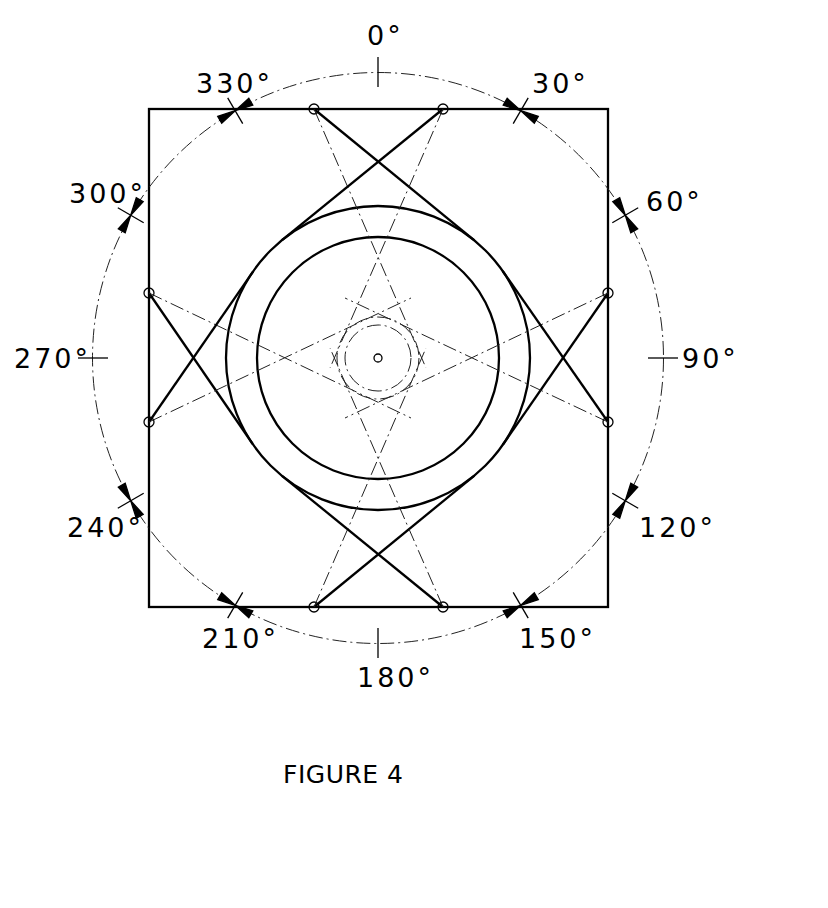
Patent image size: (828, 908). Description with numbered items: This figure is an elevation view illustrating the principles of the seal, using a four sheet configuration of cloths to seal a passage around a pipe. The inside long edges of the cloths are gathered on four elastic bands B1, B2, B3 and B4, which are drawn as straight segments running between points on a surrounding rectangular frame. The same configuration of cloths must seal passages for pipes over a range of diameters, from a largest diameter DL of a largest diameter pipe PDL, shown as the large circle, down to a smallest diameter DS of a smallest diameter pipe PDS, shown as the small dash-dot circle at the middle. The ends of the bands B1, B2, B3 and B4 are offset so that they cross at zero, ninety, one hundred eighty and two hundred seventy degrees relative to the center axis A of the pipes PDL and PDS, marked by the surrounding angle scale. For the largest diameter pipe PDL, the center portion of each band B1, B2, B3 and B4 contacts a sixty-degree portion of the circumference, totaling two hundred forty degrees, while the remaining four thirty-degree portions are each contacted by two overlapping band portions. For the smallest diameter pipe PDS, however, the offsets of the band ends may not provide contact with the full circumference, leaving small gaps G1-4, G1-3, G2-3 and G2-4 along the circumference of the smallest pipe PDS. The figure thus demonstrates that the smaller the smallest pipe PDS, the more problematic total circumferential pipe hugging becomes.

The largest diameter DL is at (497, 249).
The largest diameter pipe PDL is at (232, 497).
The smallest diameter DS is at (465, 327).
The smallest diameter pipe PDS is at (419, 359).
The center axis A is at (376, 364).
The elastic band B1 is at (336, 128).
The elastic band B2 is at (417, 133).
The elastic band B3 is at (178, 325).
The elastic band B4 is at (178, 389).
The gap G1-3 is at (410, 383).
The gap G1-4 is at (437, 316).
The gap G2-3 is at (343, 384).
The gap G2-4 is at (347, 330).